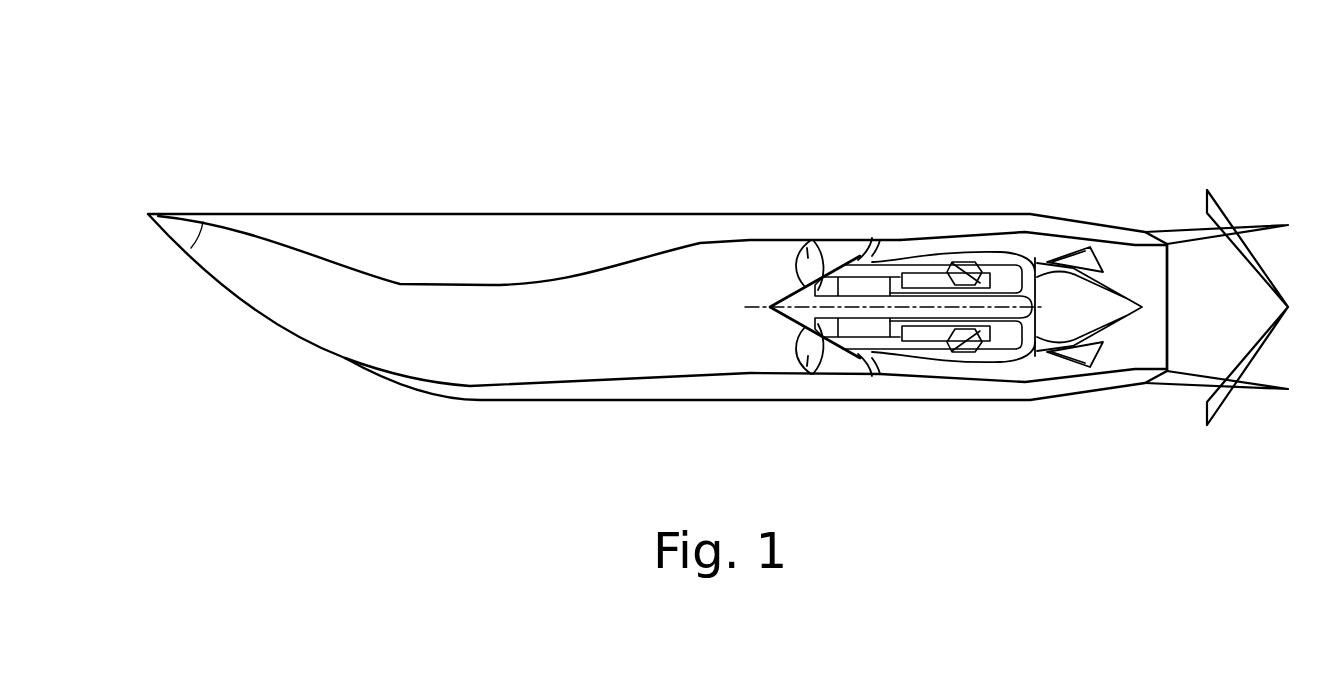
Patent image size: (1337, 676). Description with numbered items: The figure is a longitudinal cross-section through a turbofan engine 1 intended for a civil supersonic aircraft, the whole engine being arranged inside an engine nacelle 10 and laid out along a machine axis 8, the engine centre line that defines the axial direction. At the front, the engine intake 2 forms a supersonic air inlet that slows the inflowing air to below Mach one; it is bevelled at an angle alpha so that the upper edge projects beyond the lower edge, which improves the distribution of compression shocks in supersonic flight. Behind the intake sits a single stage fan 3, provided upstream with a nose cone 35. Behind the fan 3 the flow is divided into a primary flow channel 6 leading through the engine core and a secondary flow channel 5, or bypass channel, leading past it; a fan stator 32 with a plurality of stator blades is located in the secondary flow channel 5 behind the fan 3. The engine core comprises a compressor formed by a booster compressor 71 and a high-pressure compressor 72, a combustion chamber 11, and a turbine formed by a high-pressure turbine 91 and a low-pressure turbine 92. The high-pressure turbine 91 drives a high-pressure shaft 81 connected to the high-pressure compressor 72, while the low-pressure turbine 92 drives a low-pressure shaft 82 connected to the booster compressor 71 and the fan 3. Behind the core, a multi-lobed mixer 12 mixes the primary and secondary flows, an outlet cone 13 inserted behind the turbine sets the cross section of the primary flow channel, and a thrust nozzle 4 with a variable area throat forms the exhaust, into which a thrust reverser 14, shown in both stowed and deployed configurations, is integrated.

The turbofan engine 1 is at (495, 148).
The engine intake 2 is at (625, 262).
The single stage fan 3 is at (808, 243).
The thrust nozzle 4 is at (1167, 276).
The secondary flow channel 5 is at (1017, 250).
The primary flow channel 6 is at (905, 262).
The machine axis 8 is at (748, 300).
The engine nacelle 10 is at (795, 400).
The combustion chamber 11 is at (965, 357).
The multi-lobed mixer 12 is at (1083, 253).
The outlet cone 13 is at (1128, 320).
The thrust reverser 14 is at (1200, 218).
The fan stator 32 is at (870, 255).
The nose cone 35 is at (795, 285).
The booster compressor 71 is at (868, 372).
The high-pressure compressor 72 is at (928, 353).
The high-pressure shaft 81 is at (956, 262).
The low-pressure shaft 82 is at (895, 353).
The high-pressure turbine 91 is at (987, 353).
The low-pressure turbine 92 is at (1018, 356).